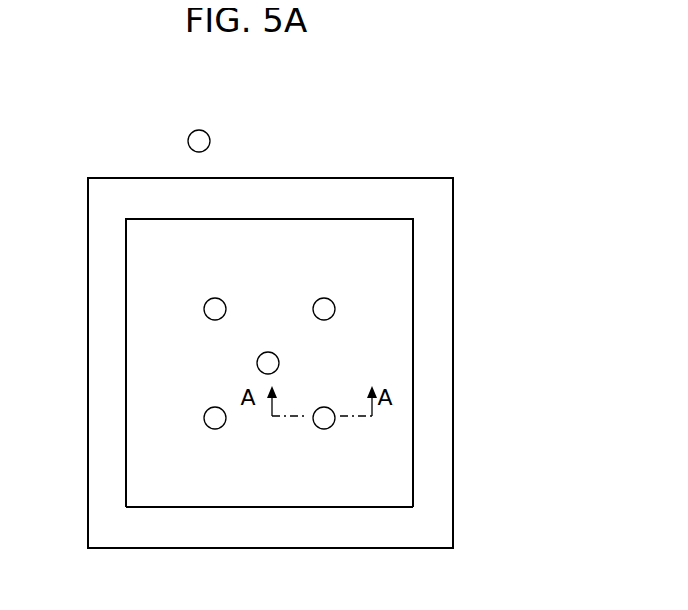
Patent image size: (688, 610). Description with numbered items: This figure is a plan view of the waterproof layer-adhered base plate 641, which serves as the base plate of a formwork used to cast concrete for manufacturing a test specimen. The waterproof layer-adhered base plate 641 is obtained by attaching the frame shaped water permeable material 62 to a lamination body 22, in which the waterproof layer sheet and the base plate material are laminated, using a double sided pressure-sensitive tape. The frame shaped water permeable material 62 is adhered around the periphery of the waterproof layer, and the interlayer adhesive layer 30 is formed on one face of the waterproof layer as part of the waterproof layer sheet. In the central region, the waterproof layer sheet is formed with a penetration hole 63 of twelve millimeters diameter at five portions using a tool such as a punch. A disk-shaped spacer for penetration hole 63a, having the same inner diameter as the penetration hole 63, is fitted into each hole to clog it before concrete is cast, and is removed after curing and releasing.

The waterproof layer-adhered base plate 641 is at (462, 186).
The frame shaped water permeable material 62 is at (432, 360).
The interlayer adhesive layer 30 is at (392, 464).
The lamination body 22 is at (363, 487).
The penetration hole 63 is at (213, 303).
The spacer for penetration hole 63a is at (203, 296).